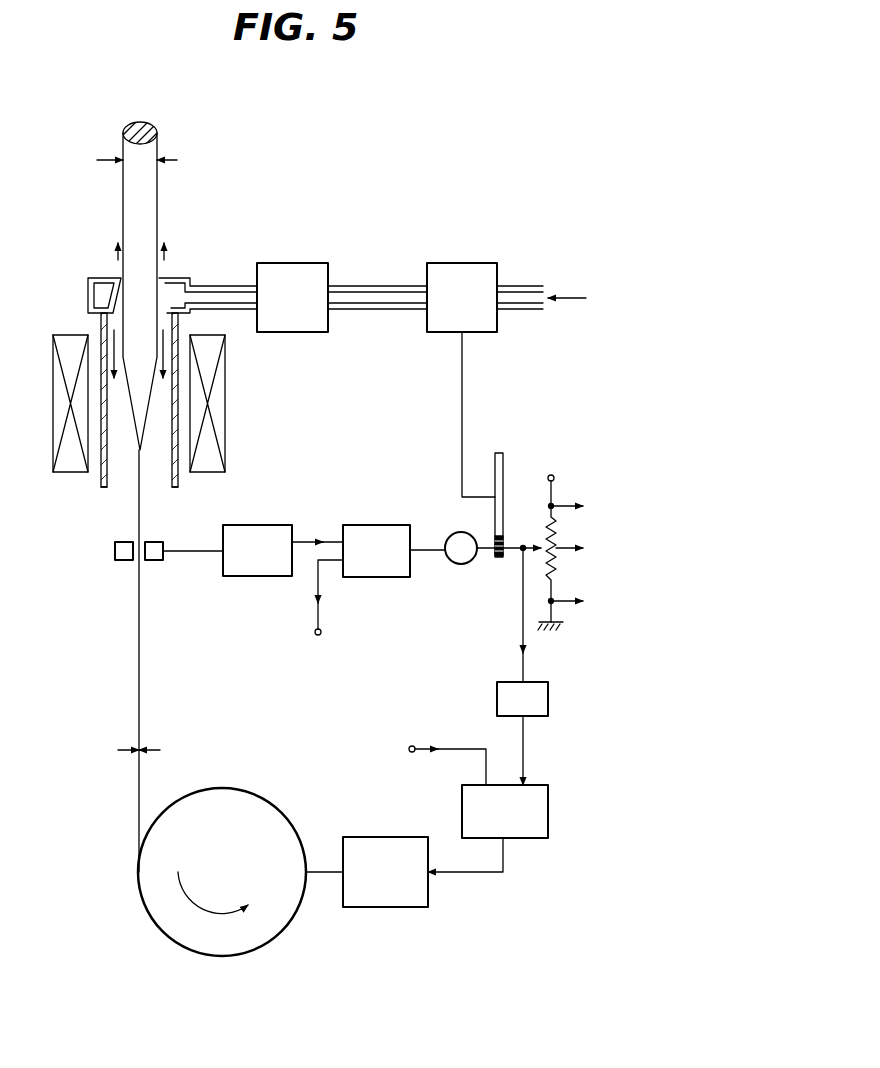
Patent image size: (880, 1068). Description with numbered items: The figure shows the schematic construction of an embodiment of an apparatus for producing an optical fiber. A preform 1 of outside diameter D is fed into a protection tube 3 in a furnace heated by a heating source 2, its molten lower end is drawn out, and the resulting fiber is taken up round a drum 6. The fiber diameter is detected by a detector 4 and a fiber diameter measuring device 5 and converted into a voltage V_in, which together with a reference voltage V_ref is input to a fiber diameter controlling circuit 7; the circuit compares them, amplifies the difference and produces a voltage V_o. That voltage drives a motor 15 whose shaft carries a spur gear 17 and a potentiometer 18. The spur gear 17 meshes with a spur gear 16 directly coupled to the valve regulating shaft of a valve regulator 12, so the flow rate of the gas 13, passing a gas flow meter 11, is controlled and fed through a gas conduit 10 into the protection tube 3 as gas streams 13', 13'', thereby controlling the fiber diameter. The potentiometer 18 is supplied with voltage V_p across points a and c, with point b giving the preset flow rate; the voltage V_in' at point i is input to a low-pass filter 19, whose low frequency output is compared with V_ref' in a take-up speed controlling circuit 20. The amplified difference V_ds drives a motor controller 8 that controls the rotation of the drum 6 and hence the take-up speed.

The preform 1 is at (182, 495).
The heating source 2 is at (53, 410).
The protection tube 3 is at (103, 488).
The fiber detector 4 is at (122, 561).
The fiber diameter measuring device 5 is at (259, 526).
The drum 6 is at (268, 803).
The fiber diameter controlling circuit 7 is at (375, 526).
The motor controller 8 is at (383, 837).
The gas conduit 10 is at (93, 280).
The gas flow meter 11 is at (292, 267).
The valve regulator 12 is at (459, 267).
The gas 13 is at (571, 278).
The gas stream 13' is at (153, 391).
The gas stream 13'' is at (144, 234).
The motor 15 is at (462, 565).
The spur gear 16 is at (494, 462).
The spur gear 17 is at (498, 559).
The potentiometer 18 is at (559, 564).
The low-pass filter 19 is at (549, 700).
The take-up speed controlling circuit 20 is at (549, 812).